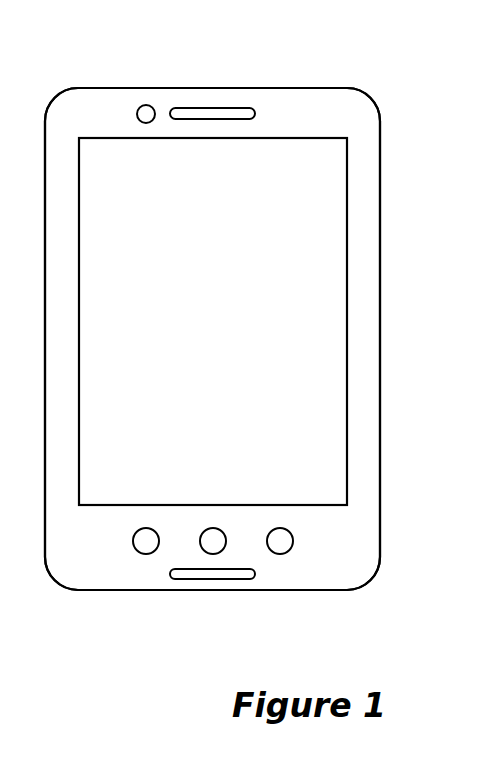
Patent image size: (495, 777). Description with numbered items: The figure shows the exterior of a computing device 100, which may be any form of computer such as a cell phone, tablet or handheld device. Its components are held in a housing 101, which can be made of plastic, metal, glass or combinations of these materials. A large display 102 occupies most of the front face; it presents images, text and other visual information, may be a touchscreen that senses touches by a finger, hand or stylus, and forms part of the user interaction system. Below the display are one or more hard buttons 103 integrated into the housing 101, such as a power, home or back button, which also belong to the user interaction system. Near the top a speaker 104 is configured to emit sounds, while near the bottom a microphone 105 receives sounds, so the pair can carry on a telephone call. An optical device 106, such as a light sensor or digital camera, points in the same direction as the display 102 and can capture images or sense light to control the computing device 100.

The computing device 100 is at (280, 53).
The housing 101 is at (380, 273).
The display 102 is at (347, 342).
The hard buttons 103 is at (146, 554).
The speaker 104 is at (221, 107).
The microphone 105 is at (243, 580).
The optical device 106 is at (146, 105).